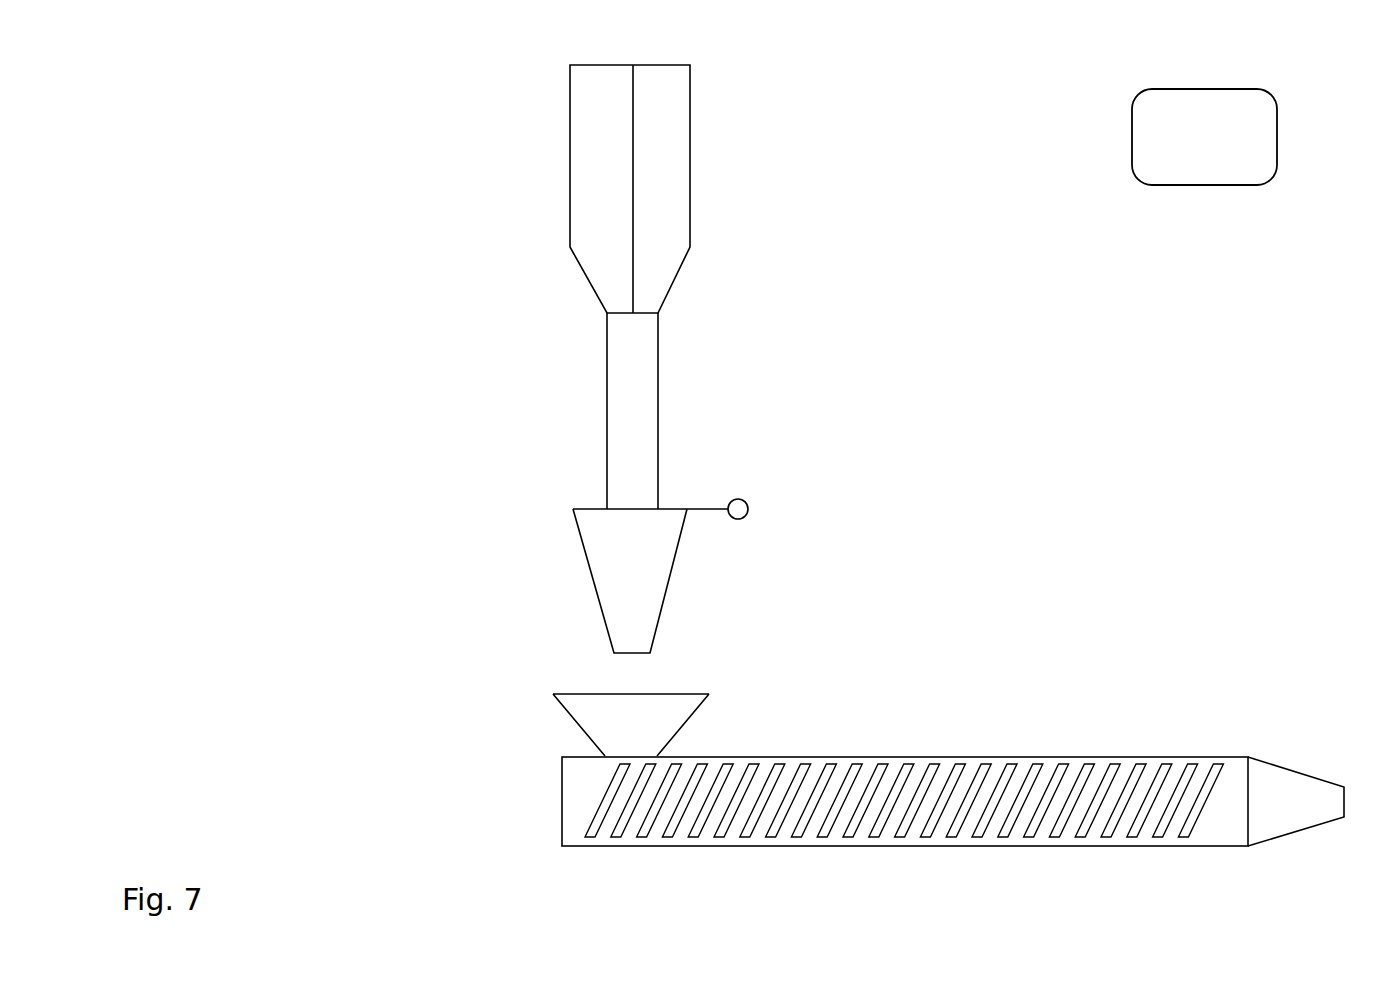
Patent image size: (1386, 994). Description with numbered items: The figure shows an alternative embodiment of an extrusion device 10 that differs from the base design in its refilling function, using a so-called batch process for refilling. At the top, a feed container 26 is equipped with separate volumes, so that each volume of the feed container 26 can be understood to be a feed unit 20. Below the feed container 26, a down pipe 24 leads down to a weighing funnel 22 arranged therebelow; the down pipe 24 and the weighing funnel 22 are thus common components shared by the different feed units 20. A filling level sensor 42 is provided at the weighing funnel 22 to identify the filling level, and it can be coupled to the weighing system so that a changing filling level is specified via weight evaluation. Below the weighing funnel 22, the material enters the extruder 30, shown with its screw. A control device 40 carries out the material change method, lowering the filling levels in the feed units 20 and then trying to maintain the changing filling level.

The extrusion device 10 is at (456, 108).
The feed unit 20 is at (738, 192).
The weighing funnel 22 is at (653, 635).
The down pipe 24 is at (658, 357).
The feed container 26 is at (690, 88).
The extruder 30 is at (1153, 757).
The control device 40 is at (1193, 89).
The filling level sensor 42 is at (744, 500).